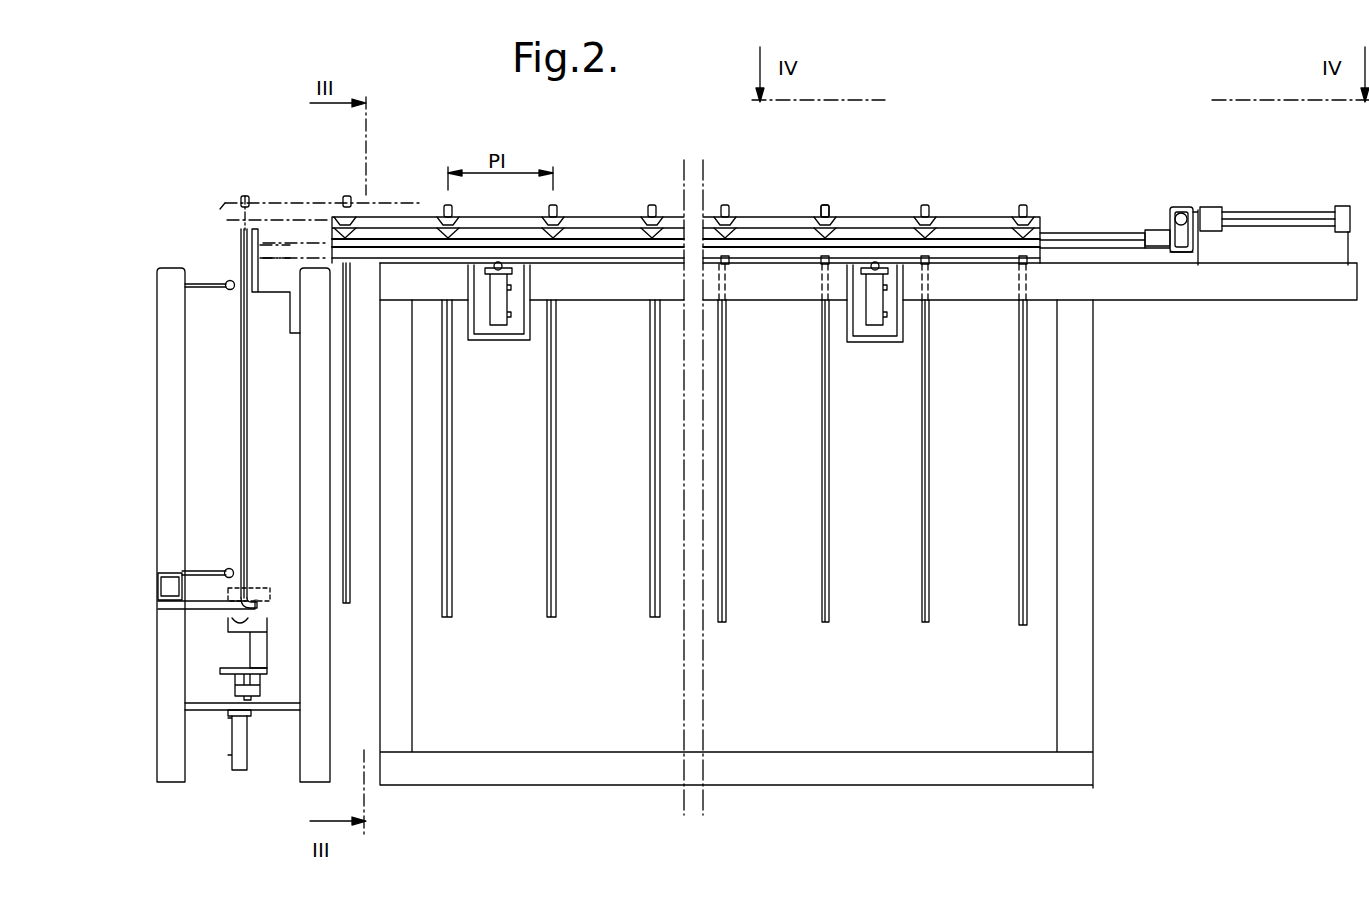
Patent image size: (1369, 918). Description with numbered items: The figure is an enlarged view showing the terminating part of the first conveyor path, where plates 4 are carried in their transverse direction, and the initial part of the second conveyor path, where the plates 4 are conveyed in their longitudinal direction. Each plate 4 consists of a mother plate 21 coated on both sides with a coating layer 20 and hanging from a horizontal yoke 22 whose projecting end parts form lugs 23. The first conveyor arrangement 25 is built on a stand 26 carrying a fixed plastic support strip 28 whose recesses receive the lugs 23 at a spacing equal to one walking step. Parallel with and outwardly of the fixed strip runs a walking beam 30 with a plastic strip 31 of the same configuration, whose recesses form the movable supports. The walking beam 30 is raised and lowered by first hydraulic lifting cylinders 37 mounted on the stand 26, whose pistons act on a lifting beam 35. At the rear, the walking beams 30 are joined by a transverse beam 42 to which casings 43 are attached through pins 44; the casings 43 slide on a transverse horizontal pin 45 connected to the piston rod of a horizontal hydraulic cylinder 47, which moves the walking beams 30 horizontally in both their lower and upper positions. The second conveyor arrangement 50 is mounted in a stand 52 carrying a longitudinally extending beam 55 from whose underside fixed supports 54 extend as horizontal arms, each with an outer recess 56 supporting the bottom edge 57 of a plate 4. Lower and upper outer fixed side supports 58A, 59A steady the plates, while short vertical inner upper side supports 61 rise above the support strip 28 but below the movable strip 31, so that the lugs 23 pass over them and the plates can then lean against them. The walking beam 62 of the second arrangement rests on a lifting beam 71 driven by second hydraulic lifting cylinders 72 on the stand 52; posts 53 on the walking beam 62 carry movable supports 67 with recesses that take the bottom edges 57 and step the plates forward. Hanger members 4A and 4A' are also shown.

The plate 4 is at (1013, 205).
The hanger 4A is at (305, 433).
The hanger rod 4A' is at (269, 413).
The coating layer 20 is at (826, 373).
The mother plate 21 is at (821, 246).
The yoke 22 is at (836, 206).
The lug 23 is at (825, 211).
The first conveyor arrangement 25 is at (659, 148).
The stand 26 is at (1093, 530).
The support strip 28 is at (582, 216).
The walking beam 30 is at (226, 208).
The plastic strip 31 is at (636, 238).
The lifting beam 35 is at (603, 275).
The first hydraulic lifting cylinder 37 is at (498, 326).
The transverse beam 42 is at (1158, 248).
The casing 43 is at (1180, 255).
The pin 44 is at (1158, 226).
The transverse horizontal pin 45 is at (1184, 212).
The horizontal hydraulic cylinder 47 is at (1275, 212).
The second conveyor arrangement 50 is at (200, 656).
The stand 52 is at (157, 450).
The post 53 is at (268, 648).
The fixed support 54 is at (200, 612).
The longitudinally extending beam 55 is at (157, 588).
The recess 56 is at (250, 598).
The bottom edge 57 is at (447, 618).
The lower outer fixed side support 58A is at (226, 567).
The upper outer fixed side support 59A is at (226, 281).
The inner upper side support 61 is at (250, 232).
The walking beam 62 is at (262, 678).
The movable support 67 is at (260, 623).
The lifting beam 71 is at (228, 690).
The second hydraulic lifting cylinder 72 is at (247, 757).